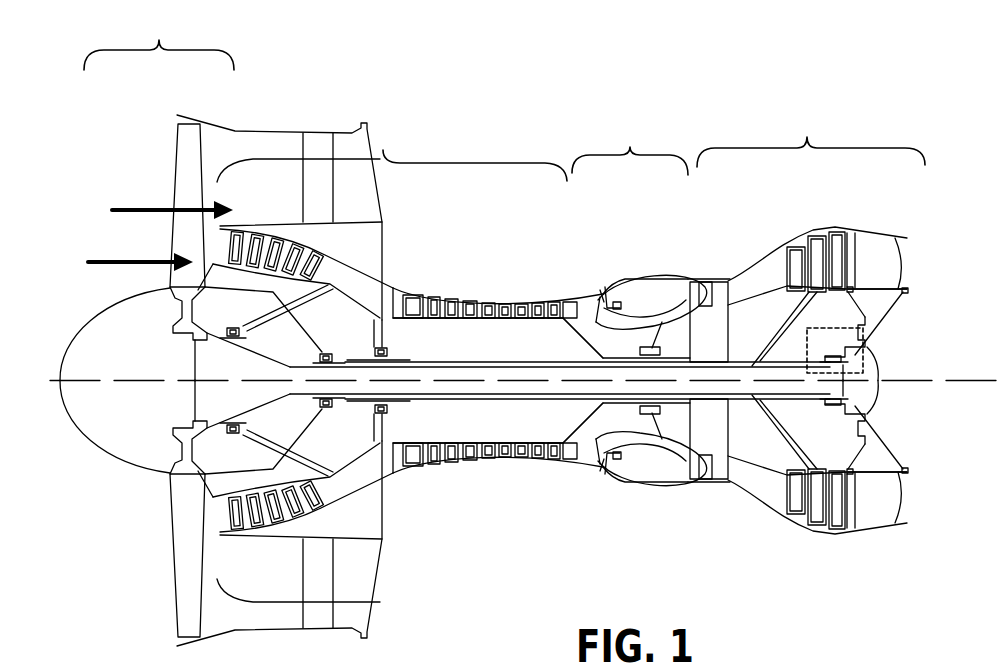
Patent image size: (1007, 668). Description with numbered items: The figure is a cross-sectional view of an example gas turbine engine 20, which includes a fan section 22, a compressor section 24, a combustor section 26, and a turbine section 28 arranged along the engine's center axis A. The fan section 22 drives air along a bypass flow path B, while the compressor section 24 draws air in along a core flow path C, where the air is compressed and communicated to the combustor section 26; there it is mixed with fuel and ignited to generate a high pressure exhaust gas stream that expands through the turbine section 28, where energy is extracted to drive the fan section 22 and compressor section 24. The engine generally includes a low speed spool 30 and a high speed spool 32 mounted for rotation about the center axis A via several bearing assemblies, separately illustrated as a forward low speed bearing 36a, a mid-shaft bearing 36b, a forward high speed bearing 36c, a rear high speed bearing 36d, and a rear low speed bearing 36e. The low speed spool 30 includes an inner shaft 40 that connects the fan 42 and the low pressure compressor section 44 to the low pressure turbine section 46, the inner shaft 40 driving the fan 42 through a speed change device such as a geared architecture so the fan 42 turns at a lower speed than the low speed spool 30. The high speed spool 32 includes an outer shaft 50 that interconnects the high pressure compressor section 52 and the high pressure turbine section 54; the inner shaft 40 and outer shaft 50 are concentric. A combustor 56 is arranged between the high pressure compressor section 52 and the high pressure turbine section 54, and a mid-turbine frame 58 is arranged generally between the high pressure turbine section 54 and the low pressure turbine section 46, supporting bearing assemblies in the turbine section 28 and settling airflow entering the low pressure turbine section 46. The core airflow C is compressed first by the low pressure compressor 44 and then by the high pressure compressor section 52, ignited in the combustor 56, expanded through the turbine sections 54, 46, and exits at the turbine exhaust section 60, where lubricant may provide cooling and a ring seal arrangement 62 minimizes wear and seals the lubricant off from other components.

The gas turbine engine 20 is at (84, 174).
The fan section 22 is at (159, 43).
The compressor section 24 is at (473, 153).
The combustor section 26 is at (630, 147).
The turbine section 28 is at (811, 135).
The low speed spool 30 is at (505, 392).
The high speed spool 32 is at (430, 405).
The forward low speed bearing 36a is at (205, 334).
The mid-shaft bearing 36b is at (328, 402).
The forward high speed bearing 36c is at (390, 352).
The rear high speed bearing 36d is at (600, 303).
The rear low speed bearing 36e is at (870, 358).
The inner shaft 40 is at (570, 395).
The fan 42 is at (184, 565).
The low pressure compressor section 44 is at (315, 240).
The low pressure turbine section 46 is at (812, 231).
The outer shaft 50 is at (614, 415).
The high pressure compressor section 52 is at (492, 304).
The high pressure turbine section 54 is at (708, 282).
The combustor 56 is at (646, 293).
The mid-turbine frame 58 is at (737, 485).
The turbine exhaust section 60 is at (873, 233).
The ring seal arrangement 62 is at (863, 398).
The center axis A is at (900, 381).
The bypass flow path B is at (143, 208).
The core flow path C is at (108, 260).